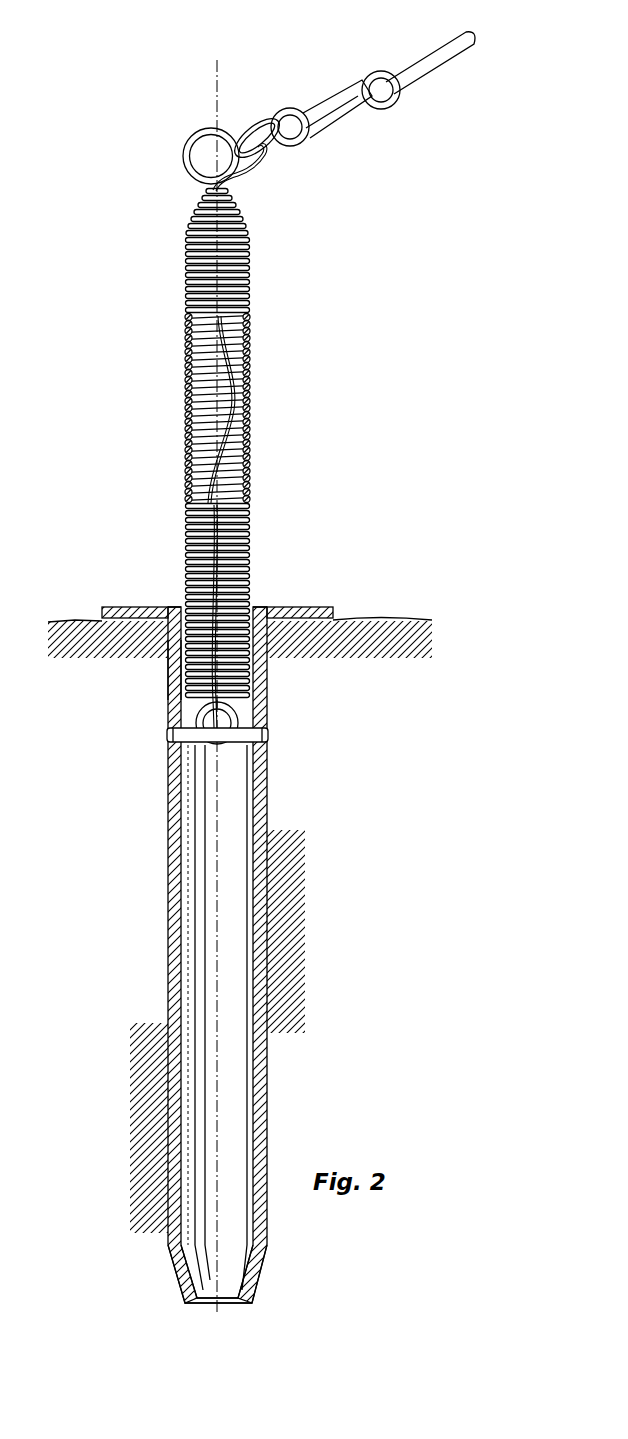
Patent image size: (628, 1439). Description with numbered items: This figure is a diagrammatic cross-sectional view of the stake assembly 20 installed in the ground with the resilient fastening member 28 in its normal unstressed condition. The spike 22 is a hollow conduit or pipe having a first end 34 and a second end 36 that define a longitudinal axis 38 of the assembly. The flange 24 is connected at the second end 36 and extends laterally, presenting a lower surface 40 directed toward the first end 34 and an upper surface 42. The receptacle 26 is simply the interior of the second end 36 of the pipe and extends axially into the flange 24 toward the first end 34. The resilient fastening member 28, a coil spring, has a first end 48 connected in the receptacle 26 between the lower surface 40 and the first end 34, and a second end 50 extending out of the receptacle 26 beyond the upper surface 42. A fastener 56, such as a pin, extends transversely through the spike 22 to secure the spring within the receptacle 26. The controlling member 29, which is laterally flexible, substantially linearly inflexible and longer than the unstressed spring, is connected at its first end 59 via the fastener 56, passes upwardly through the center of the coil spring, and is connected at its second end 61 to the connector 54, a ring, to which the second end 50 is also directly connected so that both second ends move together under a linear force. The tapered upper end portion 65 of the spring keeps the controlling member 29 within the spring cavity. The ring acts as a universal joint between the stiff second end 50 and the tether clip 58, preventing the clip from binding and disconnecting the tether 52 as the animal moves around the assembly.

The stake assembly 20 is at (126, 358).
The spike 22 is at (215, 898).
The flange 24 is at (278, 604).
The receptacle 26 is at (177, 684).
The resilient fastening member 28 is at (299, 449).
The controlling member 29 is at (234, 468).
The first end of the spike 34 is at (257, 1278).
The second end of the spike 36 is at (168, 638).
The longitudinal axis 38 is at (216, 80).
The lower surface of the flange 40 is at (327, 627).
The upper surface of the flange 42 is at (308, 607).
The first end of the resilient fastening member 48 is at (233, 717).
The second end of the resilient fastening member 50 is at (182, 138).
The tether 52 is at (448, 46).
The connector 54 is at (248, 120).
The fastener 56 is at (270, 736).
The tether clip 58 is at (322, 113).
The first end of the controlling member 59 is at (212, 737).
The second end of the controlling member 61 is at (275, 152).
The upper end portion of the resilient fastening member 65 is at (255, 210).